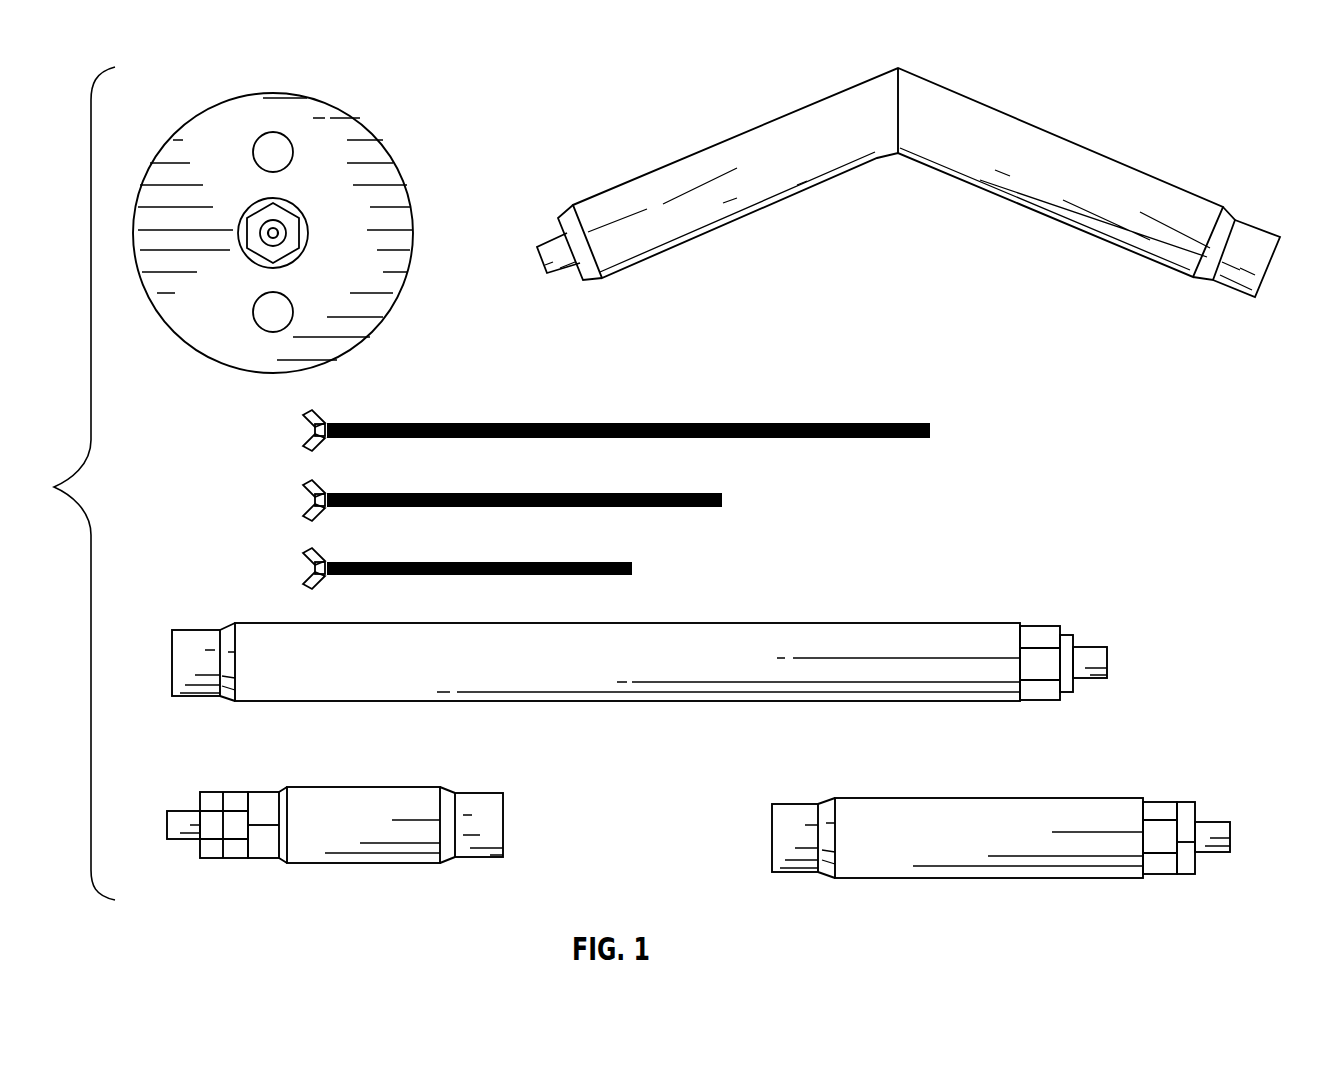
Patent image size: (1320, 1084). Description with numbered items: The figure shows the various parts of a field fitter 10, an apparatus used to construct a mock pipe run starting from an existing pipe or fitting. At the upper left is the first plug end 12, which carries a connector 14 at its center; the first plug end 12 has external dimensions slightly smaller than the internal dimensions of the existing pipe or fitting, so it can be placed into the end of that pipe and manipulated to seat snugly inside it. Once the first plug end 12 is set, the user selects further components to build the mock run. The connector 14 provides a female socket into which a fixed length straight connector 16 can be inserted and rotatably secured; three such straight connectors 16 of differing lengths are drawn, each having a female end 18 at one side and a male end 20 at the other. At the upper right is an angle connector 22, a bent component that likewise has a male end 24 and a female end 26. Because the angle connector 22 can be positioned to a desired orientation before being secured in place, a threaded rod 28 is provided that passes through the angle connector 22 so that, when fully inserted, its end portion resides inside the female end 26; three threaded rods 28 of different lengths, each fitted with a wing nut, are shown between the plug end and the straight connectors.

The field fitter 10 is at (740, 80).
The first plug end 12 is at (327, 160).
The connector 14 is at (308, 233).
The fixed length straight connector 16 is at (940, 638).
The female end 18 is at (188, 645).
The male end 20 is at (1085, 650).
The angle connector 22 is at (985, 125).
The male end 24 is at (550, 250).
The female end 26 is at (1250, 240).
The threaded rod 28 is at (855, 423).